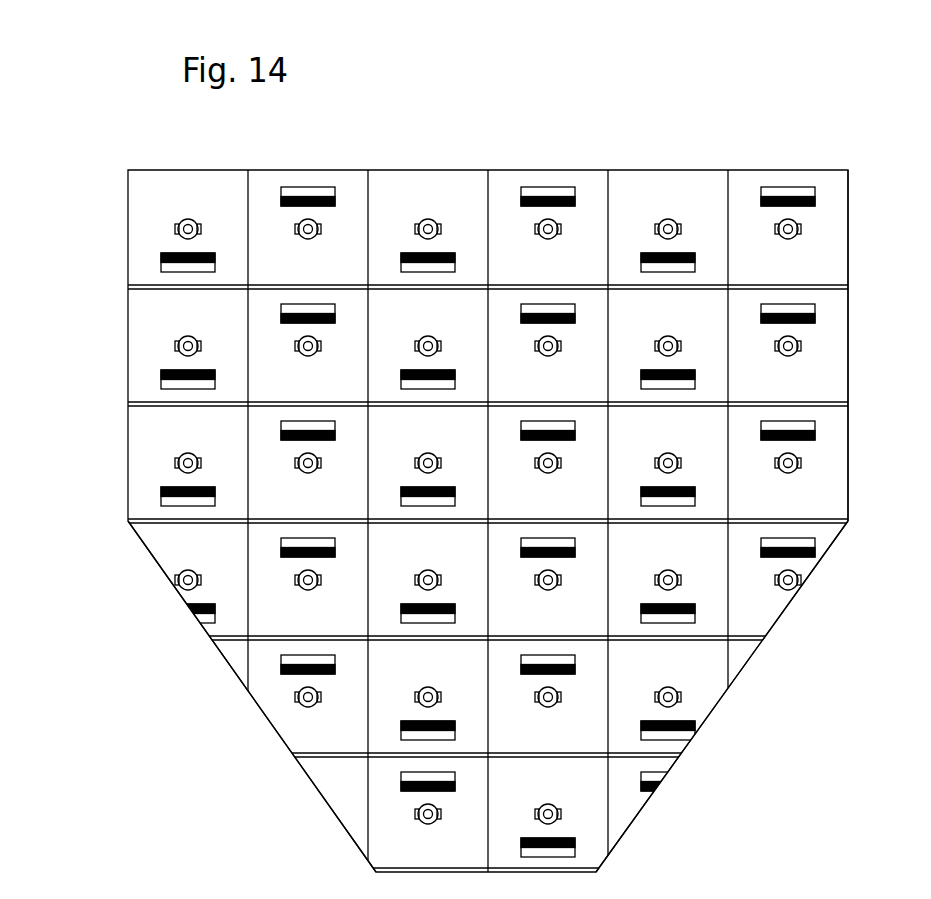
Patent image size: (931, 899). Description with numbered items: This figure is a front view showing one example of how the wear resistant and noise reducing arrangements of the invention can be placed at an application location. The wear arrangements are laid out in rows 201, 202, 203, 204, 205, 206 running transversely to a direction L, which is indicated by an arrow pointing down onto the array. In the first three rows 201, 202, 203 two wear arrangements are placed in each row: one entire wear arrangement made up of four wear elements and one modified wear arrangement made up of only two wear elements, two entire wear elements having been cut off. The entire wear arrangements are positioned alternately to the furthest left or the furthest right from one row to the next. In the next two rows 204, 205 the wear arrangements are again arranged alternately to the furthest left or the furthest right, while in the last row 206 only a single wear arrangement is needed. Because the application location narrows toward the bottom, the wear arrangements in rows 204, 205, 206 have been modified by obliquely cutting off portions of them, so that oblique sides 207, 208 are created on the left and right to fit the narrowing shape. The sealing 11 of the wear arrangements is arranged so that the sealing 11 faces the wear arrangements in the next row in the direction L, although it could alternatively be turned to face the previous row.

The direction L is at (487, 124).
The sealing 11 is at (848, 287).
The first row 201 is at (104, 233).
The second row 202 is at (104, 342).
The third row 203 is at (104, 462).
The fourth row 204 is at (141, 592).
The fifth row 205 is at (221, 704).
The last row 206 is at (313, 826).
The oblique side 207 is at (280, 738).
The oblique side 208 is at (735, 678).